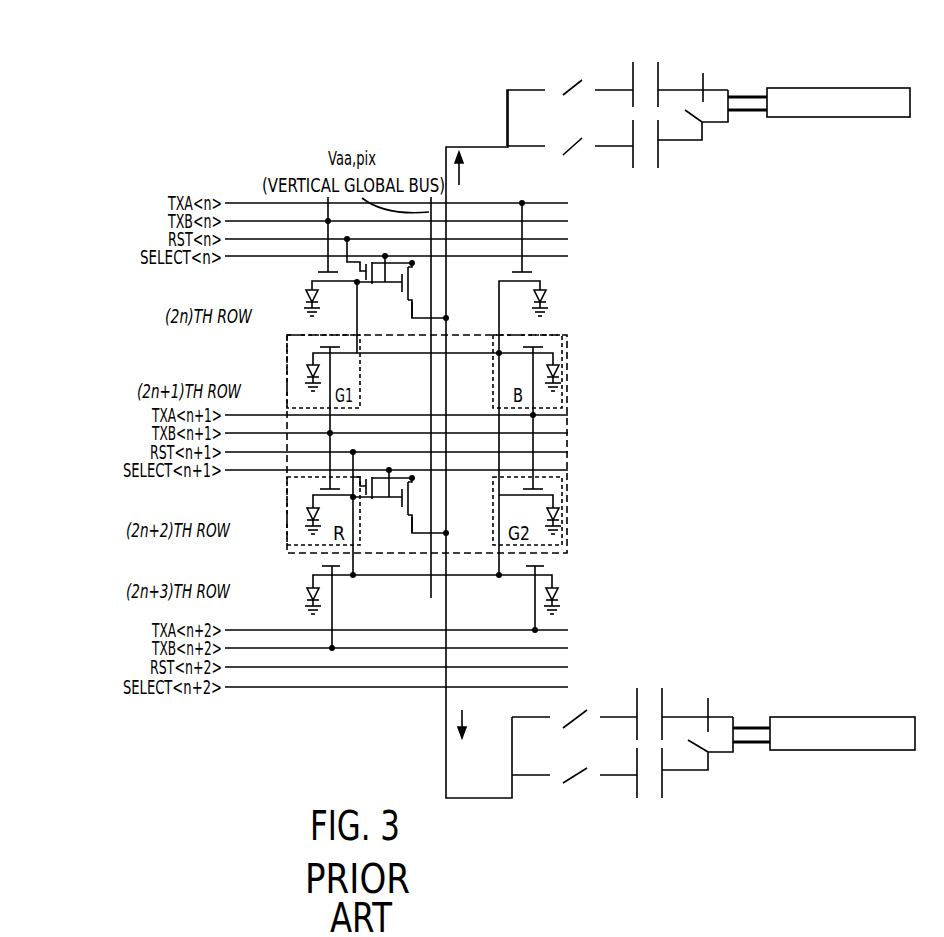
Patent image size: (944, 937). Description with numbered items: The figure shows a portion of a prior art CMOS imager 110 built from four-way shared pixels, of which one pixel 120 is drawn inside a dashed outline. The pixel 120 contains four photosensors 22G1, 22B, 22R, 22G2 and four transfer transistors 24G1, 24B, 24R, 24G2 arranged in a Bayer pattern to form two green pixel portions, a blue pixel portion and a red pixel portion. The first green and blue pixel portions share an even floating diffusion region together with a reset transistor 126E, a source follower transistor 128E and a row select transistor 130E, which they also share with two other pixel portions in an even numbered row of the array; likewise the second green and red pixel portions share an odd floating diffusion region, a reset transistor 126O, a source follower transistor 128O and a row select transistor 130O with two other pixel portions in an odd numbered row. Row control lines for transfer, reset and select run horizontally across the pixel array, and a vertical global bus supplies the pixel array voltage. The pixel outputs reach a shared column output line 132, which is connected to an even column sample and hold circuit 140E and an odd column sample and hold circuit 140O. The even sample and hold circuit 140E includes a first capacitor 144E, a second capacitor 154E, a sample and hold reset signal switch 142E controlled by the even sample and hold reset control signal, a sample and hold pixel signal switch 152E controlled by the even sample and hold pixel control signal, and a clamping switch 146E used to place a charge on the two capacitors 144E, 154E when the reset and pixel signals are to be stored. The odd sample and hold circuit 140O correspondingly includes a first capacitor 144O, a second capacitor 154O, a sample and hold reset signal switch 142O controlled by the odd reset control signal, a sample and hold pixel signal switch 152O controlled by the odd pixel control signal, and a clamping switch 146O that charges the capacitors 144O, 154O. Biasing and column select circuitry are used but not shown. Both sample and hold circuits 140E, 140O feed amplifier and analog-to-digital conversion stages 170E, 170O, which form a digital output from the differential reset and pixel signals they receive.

The CMOS imager 110 is at (196, 114).
The pixel 120 is at (568, 408).
The shared column output line 132 is at (441, 157).
The reset transistor 126E is at (345, 263).
The reset transistor 126O is at (377, 473).
The source follower transistor 128E is at (412, 288).
The source follower transistor 128O is at (413, 511).
The row select transistor 130E is at (407, 318).
The row select transistor 130O is at (410, 540).
The transfer transistor 24G1 is at (320, 352).
The photosensor 22G1 is at (313, 374).
The transfer transistor 24B is at (548, 347).
The photosensor 22B is at (556, 378).
The transfer transistor 24R is at (320, 493).
The photosensor 22R is at (313, 516).
The transfer transistor 24G2 is at (548, 491).
The photosensor 22G2 is at (560, 518).
The even column sample and hold circuit 140E is at (713, 151).
The odd column sample and hold circuit 140O is at (713, 735).
The sample and hold reset signal switch 142E is at (562, 88).
The sample and hold reset signal switch 142O is at (558, 726).
The first capacitor 144E is at (646, 72).
The first capacitor 144O is at (650, 692).
The clamping switch 146E is at (673, 92).
The clamping switch 146O is at (712, 750).
The sample and hold pixel signal switch 152E is at (578, 140).
The sample and hold pixel signal switch 152O is at (570, 777).
The second capacitor 154E is at (647, 160).
The second capacitor 154O is at (650, 795).
The amplifier and analog-to-digital conversion stages 170E is at (891, 119).
The amplifier and analog-to-digital conversion stages 170O is at (895, 752).